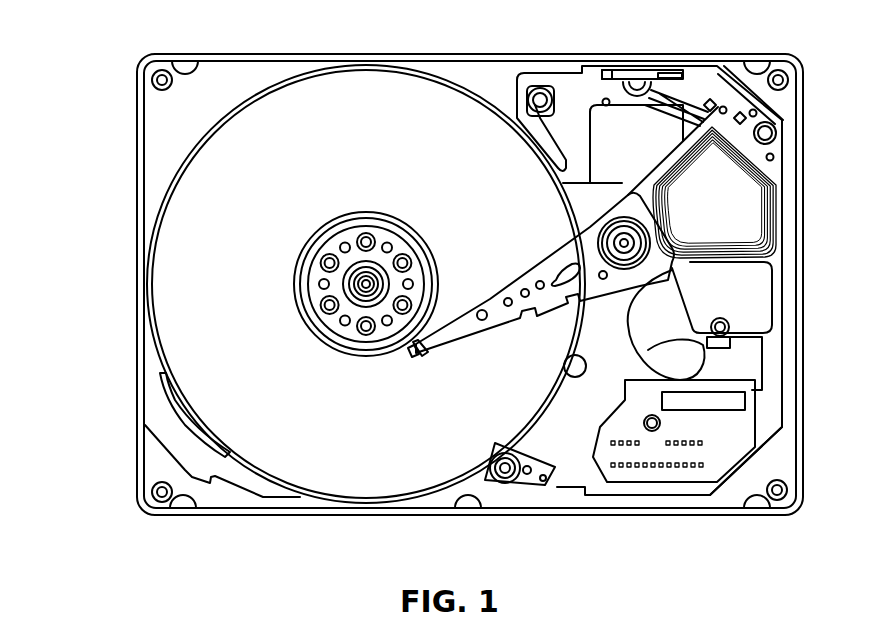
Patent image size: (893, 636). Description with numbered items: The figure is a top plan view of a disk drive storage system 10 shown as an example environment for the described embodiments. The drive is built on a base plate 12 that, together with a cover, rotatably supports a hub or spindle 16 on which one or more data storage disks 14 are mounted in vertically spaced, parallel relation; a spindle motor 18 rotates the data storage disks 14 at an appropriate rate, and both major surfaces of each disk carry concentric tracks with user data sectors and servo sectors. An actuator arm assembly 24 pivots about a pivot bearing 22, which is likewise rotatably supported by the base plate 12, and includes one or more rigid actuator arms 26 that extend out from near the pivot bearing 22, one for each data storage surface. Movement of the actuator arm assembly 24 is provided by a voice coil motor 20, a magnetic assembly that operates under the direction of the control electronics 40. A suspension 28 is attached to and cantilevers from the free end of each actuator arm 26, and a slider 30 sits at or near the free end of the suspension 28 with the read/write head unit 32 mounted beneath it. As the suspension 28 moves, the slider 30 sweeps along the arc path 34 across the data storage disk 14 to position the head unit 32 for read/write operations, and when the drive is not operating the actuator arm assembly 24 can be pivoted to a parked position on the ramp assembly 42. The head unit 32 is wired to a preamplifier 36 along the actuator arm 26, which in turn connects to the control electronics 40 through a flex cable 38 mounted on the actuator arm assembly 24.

The disk drive storage system 10 is at (122, 110).
The base plate 12 is at (280, 55).
The data storage disk 14 is at (376, 100).
The spindle 16 is at (388, 215).
The spindle motor 18 is at (350, 268).
The voice coil motor 20 is at (730, 208).
The pivot bearing 22 is at (642, 240).
The actuator arm assembly 24 is at (548, 255).
The actuator arm 26 is at (520, 312).
The suspension 28 is at (458, 298).
The slider 30 is at (436, 349).
The head unit 32 is at (410, 354).
The arc path 34 is at (487, 434).
The preamplifier 36 is at (637, 303).
The flex cable 38 is at (670, 378).
The control electronics 40 is at (660, 475).
The ramp assembly 42 is at (522, 480).